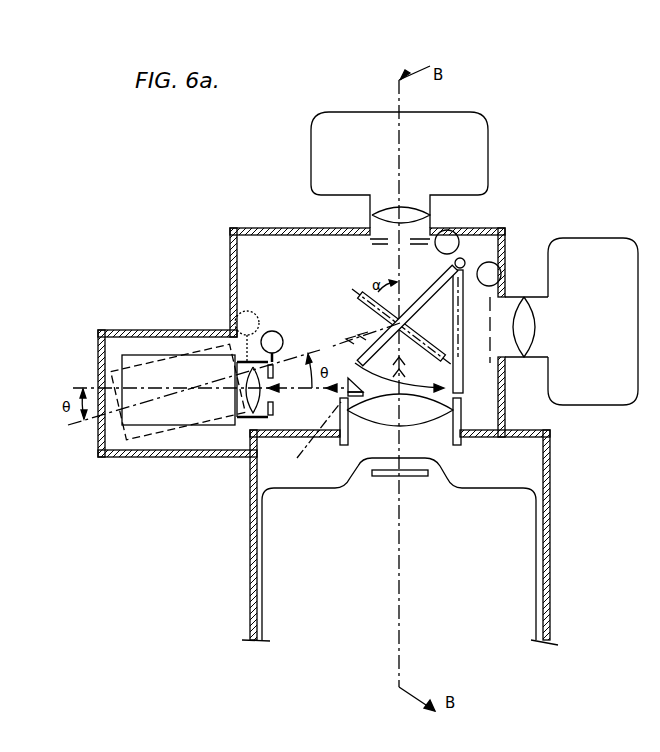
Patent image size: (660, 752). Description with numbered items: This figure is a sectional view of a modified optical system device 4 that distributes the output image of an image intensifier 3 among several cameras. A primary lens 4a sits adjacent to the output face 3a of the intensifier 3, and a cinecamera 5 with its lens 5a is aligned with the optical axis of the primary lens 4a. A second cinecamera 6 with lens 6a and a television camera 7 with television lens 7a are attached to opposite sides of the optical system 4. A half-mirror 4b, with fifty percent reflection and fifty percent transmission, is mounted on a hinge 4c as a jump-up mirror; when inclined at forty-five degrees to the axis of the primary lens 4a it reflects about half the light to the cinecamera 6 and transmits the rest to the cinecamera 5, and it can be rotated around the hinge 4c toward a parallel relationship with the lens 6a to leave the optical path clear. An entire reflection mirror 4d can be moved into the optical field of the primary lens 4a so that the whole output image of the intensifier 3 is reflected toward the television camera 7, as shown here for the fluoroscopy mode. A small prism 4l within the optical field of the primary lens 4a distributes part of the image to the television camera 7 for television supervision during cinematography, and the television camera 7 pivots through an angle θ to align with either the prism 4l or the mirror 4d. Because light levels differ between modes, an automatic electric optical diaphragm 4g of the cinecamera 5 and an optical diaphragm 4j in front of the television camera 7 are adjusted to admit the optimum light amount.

The image intensifier 3 is at (551, 570).
The output face 3a is at (375, 477).
The optical system device 4 is at (534, 224).
The primary lens 4a is at (441, 418).
The half-mirror 4b is at (426, 297).
The hinge 4c is at (462, 258).
The entire reflection mirror 4d is at (351, 300).
The optical diaphragm 4g is at (372, 241).
The optical diaphragm 4j is at (271, 418).
The small prism 4l is at (341, 397).
The cinecamera 5 is at (486, 128).
The lens 5a is at (413, 206).
The cinecamera 6 is at (597, 240).
The lens 6a is at (535, 320).
The television camera 7 is at (150, 352).
The television lens 7a is at (213, 362).